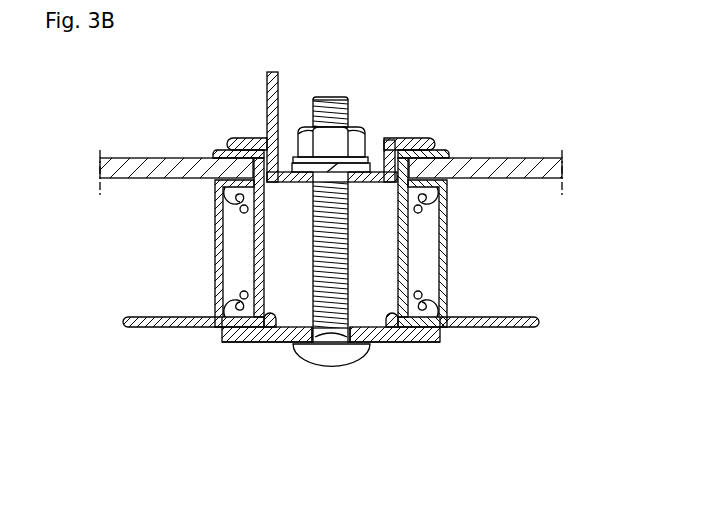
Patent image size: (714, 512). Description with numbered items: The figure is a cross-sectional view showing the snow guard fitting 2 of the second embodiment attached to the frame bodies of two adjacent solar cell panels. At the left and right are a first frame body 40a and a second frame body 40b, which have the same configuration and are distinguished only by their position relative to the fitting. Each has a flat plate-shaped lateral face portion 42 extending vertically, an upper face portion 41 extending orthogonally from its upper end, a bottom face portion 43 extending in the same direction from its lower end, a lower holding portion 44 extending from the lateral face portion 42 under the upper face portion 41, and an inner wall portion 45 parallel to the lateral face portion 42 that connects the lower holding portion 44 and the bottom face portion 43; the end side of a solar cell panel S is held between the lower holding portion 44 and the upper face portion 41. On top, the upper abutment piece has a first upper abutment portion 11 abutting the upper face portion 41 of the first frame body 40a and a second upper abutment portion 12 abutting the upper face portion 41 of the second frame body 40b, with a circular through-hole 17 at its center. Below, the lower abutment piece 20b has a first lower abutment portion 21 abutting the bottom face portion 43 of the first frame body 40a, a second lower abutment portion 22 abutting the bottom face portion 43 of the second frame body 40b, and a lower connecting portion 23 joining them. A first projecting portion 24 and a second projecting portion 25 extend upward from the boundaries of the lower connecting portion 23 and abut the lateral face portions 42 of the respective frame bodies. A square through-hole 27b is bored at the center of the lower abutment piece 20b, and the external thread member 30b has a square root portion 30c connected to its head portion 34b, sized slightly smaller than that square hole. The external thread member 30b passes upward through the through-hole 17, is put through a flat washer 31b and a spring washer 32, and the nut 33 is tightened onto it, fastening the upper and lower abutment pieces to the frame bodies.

The snow guard fitting 2 is at (326, 251).
The first upper abutment portion 11 is at (247, 138).
The second upper abutment portion 12 is at (412, 138).
The through-hole 17 is at (313, 186).
The lower abutment piece 20b is at (333, 349).
The first lower abutment portion 21 is at (233, 343).
The second lower abutment portion 22 is at (430, 343).
The lower connecting portion 23 is at (285, 343).
The first projecting portion 24 is at (270, 316).
The second projecting portion 25 is at (392, 316).
The through-hole 27b is at (303, 357).
The external thread member 30b is at (350, 225).
The square root portion 30c is at (330, 333).
The flat washer 31b is at (360, 183).
The spring washer 32 is at (288, 160).
The nut 33 is at (360, 157).
The head portion 34b is at (347, 362).
The first frame body 40a is at (125, 246).
The second frame body 40b is at (518, 245).
The upper face portion 41 is at (216, 153).
The lateral face portion 42 is at (256, 252).
The bottom face portion 43 is at (175, 330).
The lower holding portion 44 is at (235, 212).
The inner wall portion 45 is at (220, 282).
The solar cell panel S is at (121, 158).